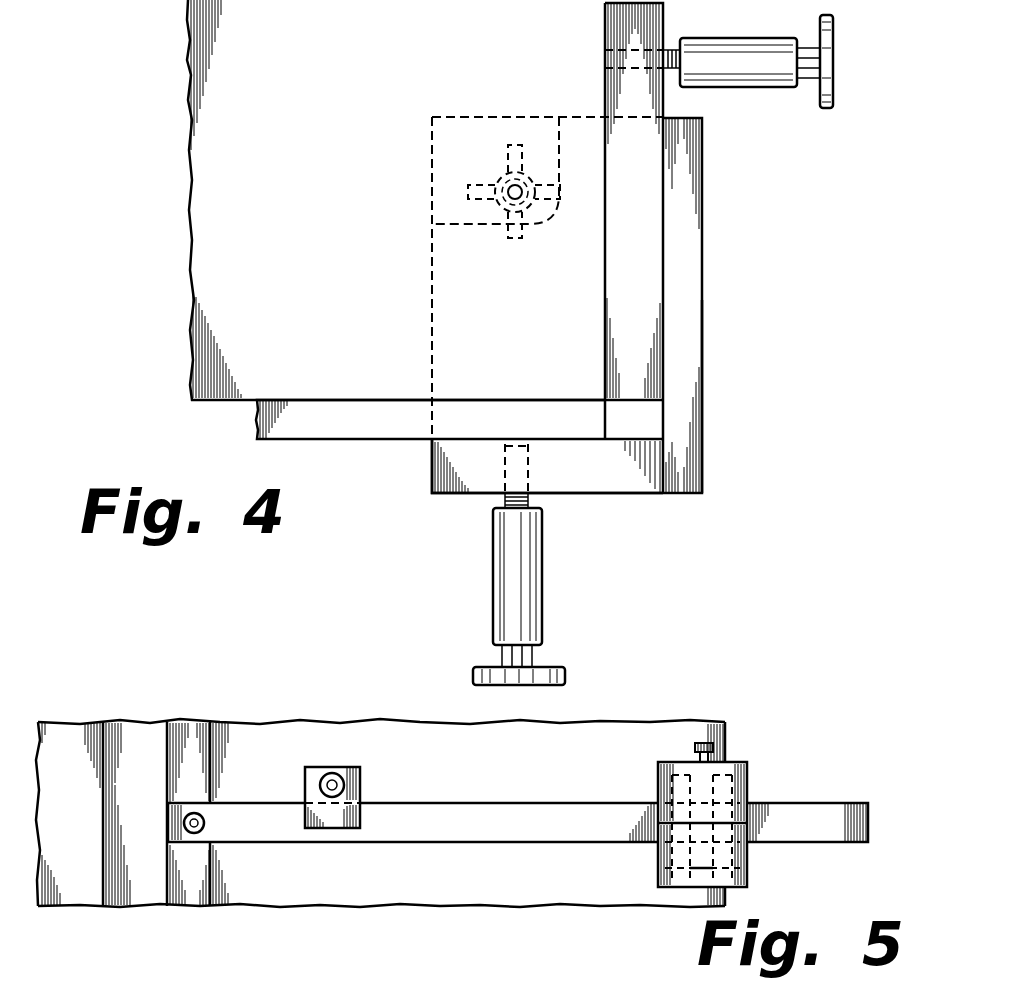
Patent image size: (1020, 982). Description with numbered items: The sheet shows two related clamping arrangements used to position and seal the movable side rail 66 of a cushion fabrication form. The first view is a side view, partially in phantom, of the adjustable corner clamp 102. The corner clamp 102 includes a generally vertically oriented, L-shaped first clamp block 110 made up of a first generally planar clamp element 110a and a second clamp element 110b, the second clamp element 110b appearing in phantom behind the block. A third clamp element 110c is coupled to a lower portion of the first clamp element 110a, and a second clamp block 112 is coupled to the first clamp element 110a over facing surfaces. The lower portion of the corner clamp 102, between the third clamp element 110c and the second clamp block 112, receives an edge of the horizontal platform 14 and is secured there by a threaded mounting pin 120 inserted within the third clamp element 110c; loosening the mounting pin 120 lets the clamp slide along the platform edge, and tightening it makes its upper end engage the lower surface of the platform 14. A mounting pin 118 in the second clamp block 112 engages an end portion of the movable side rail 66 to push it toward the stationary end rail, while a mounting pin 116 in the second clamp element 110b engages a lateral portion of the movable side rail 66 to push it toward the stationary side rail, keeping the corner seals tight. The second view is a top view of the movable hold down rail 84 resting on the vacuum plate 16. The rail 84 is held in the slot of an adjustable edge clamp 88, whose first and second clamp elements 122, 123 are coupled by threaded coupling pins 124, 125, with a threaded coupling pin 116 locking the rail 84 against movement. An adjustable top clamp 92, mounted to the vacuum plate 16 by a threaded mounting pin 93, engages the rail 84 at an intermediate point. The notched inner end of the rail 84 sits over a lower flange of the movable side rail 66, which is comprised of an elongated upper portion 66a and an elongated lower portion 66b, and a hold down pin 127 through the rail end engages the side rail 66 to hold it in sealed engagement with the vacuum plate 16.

In FIG. 4, the horizontal platform 14 is at (373, 422).
In FIG. 5, the vacuum plate 16 is at (550, 779).
In FIG. 4, the movable side rail 66 is at (318, 175).
In FIG. 5, the movable side rail 66 is at (102, 768).
In FIG. 5, the elongated upper portion 66a is at (135, 742).
In FIG. 5, the elongated lower portion 66b is at (192, 750).
In FIG. 5, the movable hold down rail 84 is at (453, 815).
In FIG. 5, the adjustable edge clamp 88 is at (687, 811).
In FIG. 5, the adjustable top clamp 92 is at (332, 770).
In FIG. 5, the threaded mounting pin 93 is at (345, 778).
In FIG. 4, the adjustable corner clamp 102 is at (648, 332).
In FIG. 4, the first clamp block 110 is at (632, 332).
In FIG. 4, the first clamp element 110a is at (702, 445).
In FIG. 4, the second clamp element 110b is at (432, 283).
In FIG. 4, the third clamp element 110c is at (592, 470).
In FIG. 4, the second clamp block 112 is at (638, 257).
In FIG. 4, the mounting pin 116 is at (500, 178).
In FIG. 5, the mounting pin 116 is at (705, 745).
In FIG. 4, the mounting pin 118 is at (752, 87).
In FIG. 4, the threaded mounting pin 120 is at (518, 583).
In FIG. 5, the first clamp element 122 is at (670, 765).
In FIG. 5, the second clamp element 123 is at (660, 873).
In FIG. 5, the threaded coupling pin 124 is at (655, 883).
In FIG. 5, the threaded coupling pin 125 is at (740, 868).
In FIG. 5, the hold down pin 127 is at (210, 818).